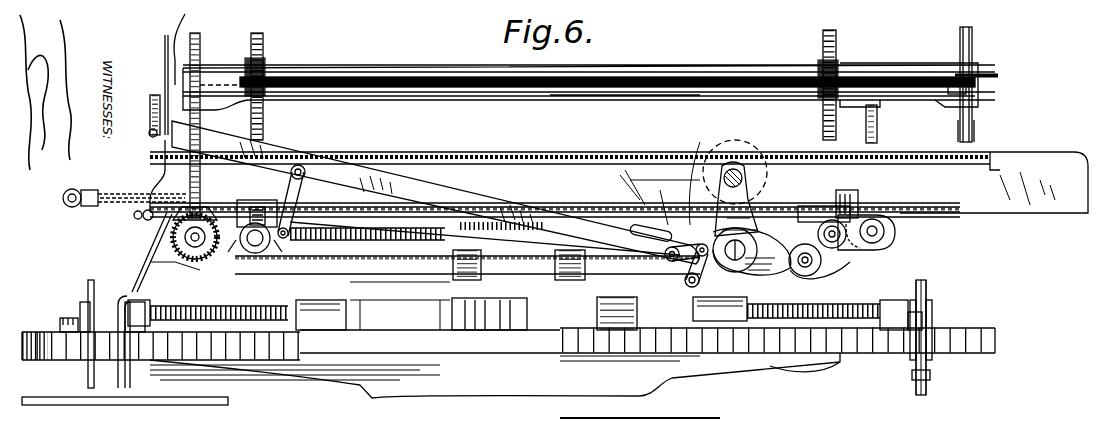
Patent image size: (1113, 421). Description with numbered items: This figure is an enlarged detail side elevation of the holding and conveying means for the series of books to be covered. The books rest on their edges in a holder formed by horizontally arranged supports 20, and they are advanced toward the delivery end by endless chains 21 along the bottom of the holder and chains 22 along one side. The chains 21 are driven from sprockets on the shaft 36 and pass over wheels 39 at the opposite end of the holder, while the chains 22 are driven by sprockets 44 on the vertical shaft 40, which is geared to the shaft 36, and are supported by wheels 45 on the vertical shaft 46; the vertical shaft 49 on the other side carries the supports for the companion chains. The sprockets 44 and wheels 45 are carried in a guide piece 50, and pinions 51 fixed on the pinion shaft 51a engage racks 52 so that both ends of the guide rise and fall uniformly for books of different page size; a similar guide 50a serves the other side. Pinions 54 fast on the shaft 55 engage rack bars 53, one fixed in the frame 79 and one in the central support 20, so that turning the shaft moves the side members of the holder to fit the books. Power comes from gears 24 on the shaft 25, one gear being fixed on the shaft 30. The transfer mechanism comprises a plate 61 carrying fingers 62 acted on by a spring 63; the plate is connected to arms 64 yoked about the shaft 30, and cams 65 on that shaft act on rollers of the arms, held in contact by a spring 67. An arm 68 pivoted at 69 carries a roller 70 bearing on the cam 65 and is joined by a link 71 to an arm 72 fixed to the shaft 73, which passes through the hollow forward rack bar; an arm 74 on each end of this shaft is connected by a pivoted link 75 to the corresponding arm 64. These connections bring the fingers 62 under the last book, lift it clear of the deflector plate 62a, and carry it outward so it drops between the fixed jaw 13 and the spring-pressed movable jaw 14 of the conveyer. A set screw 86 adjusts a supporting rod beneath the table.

The jaw 13 is at (86, 293).
The movable jaw 14 is at (127, 298).
The supports 20 is at (619, 237).
The endless chains 21 is at (400, 294).
The chains 22 is at (677, 74).
The gears 24 is at (750, 144).
The shaft 25 is at (776, 160).
The shaft 30 is at (752, 272).
The shaft 36 is at (172, 240).
The wheels 39 is at (898, 235).
The vertical shaft 40 is at (200, 34).
The sprockets 44 is at (122, 171).
The wheels 45 is at (984, 74).
The vertical shaft 46 is at (973, 36).
The vertical shaft 49 is at (878, 131).
The guide piece 50 is at (394, 66).
The guide 50a is at (508, 374).
The pinions 51 is at (268, 58).
The pinion shaft 51a is at (577, 96).
The racks 52 is at (262, 48).
The rack bars 53 is at (196, 282).
The pinions 54 is at (250, 200).
The shaft 55 is at (630, 172).
The plate 61 is at (166, 63).
The fingers 62 is at (146, 218).
The deflector plate 62a is at (140, 268).
The spring 63 is at (158, 92).
The arms 64 is at (298, 164).
The cams 65 is at (808, 277).
The spring 67 is at (335, 276).
The arm 68 is at (685, 270).
The pivot 69 is at (692, 288).
The roller 70 is at (700, 170).
The link 71 is at (452, 232).
The arm 72 is at (215, 258).
The shaft 73 is at (238, 262).
The arm 74 is at (288, 270).
The pivoted link 75 is at (372, 164).
The frame 79 is at (612, 276).
The set screw 86 is at (830, 258).